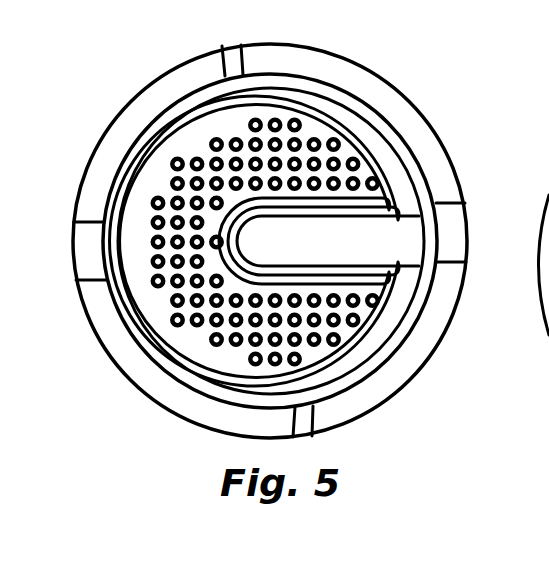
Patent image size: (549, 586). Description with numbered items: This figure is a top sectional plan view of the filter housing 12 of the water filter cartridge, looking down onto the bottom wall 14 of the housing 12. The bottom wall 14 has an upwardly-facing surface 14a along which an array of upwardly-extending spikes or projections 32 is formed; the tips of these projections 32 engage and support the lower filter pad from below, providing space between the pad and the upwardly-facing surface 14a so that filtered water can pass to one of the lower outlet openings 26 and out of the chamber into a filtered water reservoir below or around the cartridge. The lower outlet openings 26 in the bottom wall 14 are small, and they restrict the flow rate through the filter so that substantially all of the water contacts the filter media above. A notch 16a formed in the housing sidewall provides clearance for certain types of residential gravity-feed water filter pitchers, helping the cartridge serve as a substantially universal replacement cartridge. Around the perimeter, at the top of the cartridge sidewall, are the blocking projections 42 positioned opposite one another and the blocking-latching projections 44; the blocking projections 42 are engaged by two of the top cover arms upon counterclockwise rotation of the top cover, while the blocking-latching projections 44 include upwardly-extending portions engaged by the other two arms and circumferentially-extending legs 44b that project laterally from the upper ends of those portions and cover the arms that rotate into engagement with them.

The filter housing 12 is at (399, 78).
The bottom wall 14 is at (227, 127).
The upwardly-facing surface 14a is at (197, 136).
The notch 16a is at (403, 217).
The lower outlet openings 26 is at (118, 185).
The projections 32 is at (275, 123).
The blocking projections 42 is at (233, 60).
The blocking-latching projections 44 is at (66, 228).
The circumferentially-extending legs 44b is at (88, 249).